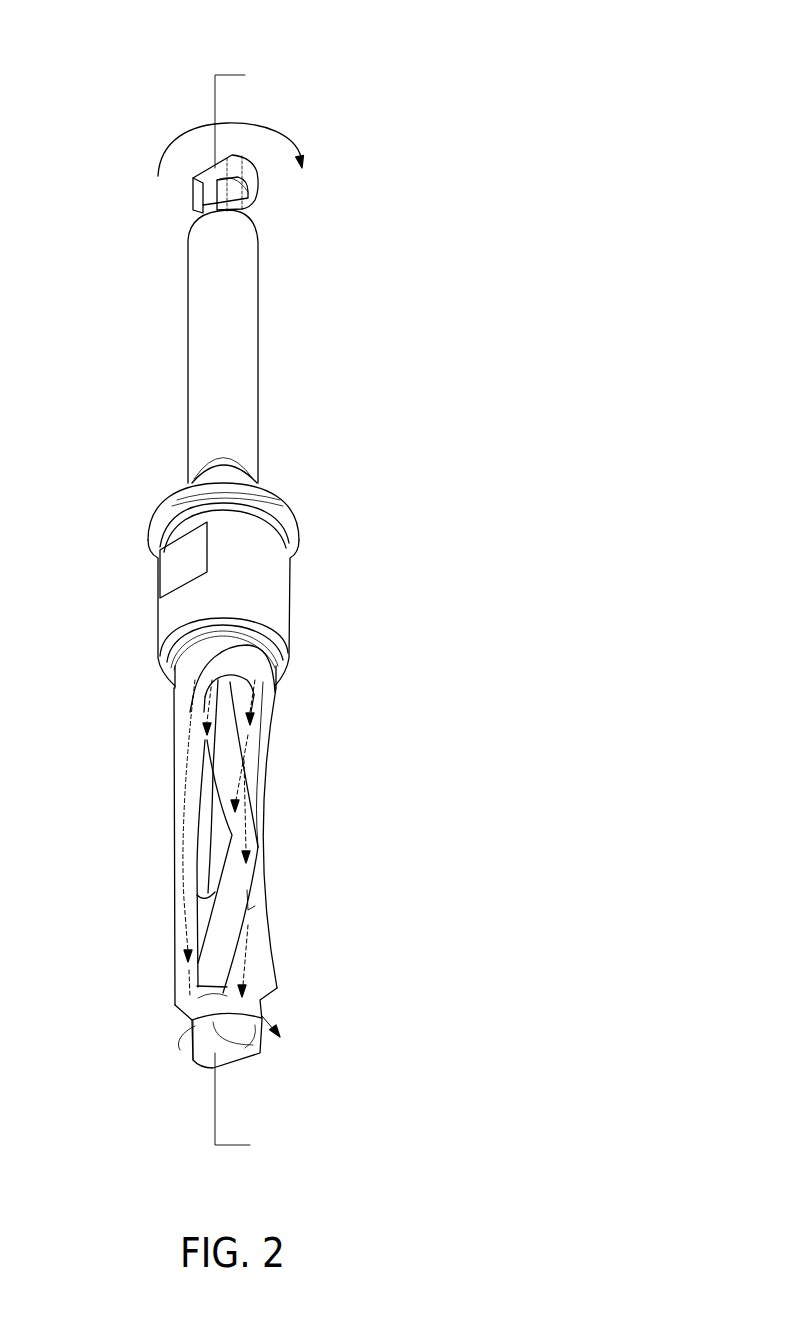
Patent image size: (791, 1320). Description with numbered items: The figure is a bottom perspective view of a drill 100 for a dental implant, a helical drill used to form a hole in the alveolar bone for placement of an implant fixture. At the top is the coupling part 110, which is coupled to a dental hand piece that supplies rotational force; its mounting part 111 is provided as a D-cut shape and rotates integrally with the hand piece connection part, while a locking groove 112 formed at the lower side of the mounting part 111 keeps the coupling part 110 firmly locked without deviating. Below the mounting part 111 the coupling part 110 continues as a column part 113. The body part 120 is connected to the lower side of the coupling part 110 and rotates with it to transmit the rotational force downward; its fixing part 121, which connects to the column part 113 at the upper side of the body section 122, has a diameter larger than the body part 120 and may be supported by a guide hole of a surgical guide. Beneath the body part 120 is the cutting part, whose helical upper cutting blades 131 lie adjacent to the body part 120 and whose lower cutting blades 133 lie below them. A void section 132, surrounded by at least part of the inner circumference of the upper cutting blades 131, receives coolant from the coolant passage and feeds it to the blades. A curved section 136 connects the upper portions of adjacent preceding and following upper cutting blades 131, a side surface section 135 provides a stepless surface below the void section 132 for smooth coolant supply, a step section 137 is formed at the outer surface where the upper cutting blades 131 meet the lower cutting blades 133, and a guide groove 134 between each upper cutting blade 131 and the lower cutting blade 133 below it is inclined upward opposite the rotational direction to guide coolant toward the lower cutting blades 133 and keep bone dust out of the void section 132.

The drill for a dental implant 100 is at (243, 579).
The coupling part 110 is at (304, 318).
The mounting part 111 is at (291, 193).
The locking groove 112 is at (234, 190).
The column part 113 is at (240, 432).
The body part 120 is at (243, 580).
The fixing part 121 is at (278, 500).
The body section 122 is at (173, 613).
The upper cutting blades 131 is at (243, 820).
The void section 132 is at (222, 763).
The lower cutting blades 133 is at (193, 1027).
The guide groove 134 is at (212, 1008).
The side surface section 135 is at (253, 960).
The curved section 136 is at (265, 655).
The step section 137 is at (210, 967).